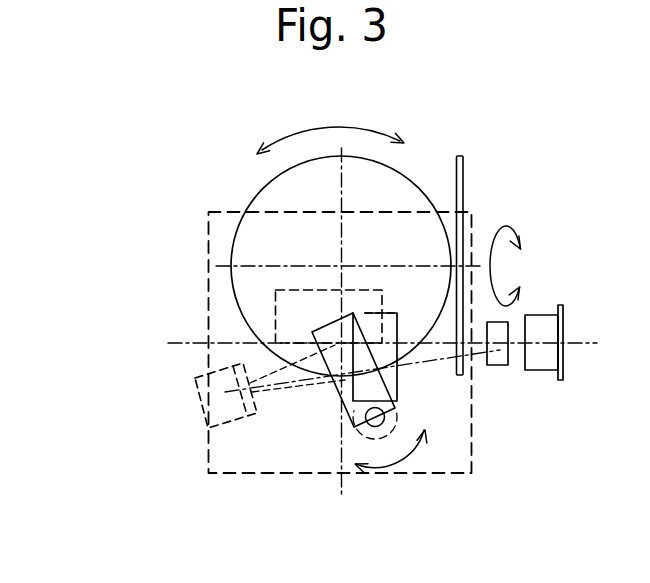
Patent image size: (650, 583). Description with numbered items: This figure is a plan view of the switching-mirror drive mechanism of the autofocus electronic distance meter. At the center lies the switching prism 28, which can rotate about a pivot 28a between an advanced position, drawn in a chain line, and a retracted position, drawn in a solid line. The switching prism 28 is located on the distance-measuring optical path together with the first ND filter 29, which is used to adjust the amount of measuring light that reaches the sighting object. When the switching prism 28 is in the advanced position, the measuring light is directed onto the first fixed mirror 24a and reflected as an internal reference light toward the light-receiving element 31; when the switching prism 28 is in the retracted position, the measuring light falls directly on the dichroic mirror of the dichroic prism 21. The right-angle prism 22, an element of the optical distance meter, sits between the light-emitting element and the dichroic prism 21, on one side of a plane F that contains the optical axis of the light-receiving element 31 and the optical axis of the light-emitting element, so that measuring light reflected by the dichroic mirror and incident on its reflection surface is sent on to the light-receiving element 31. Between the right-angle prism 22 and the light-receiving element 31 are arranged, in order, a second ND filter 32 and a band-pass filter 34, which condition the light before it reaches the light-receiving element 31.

The dichroic prism 21 is at (453, 477).
The right-angle prism 22 is at (275, 322).
The first fixed mirror 24a is at (198, 418).
The switching prism 28 is at (391, 322).
The pivot 28a is at (385, 417).
The first ND filter 29 is at (270, 202).
The light-receiving element 31 is at (545, 325).
The second ND filter 32 is at (462, 164).
The band-pass filter 34 is at (497, 365).
The plane F is at (168, 343).